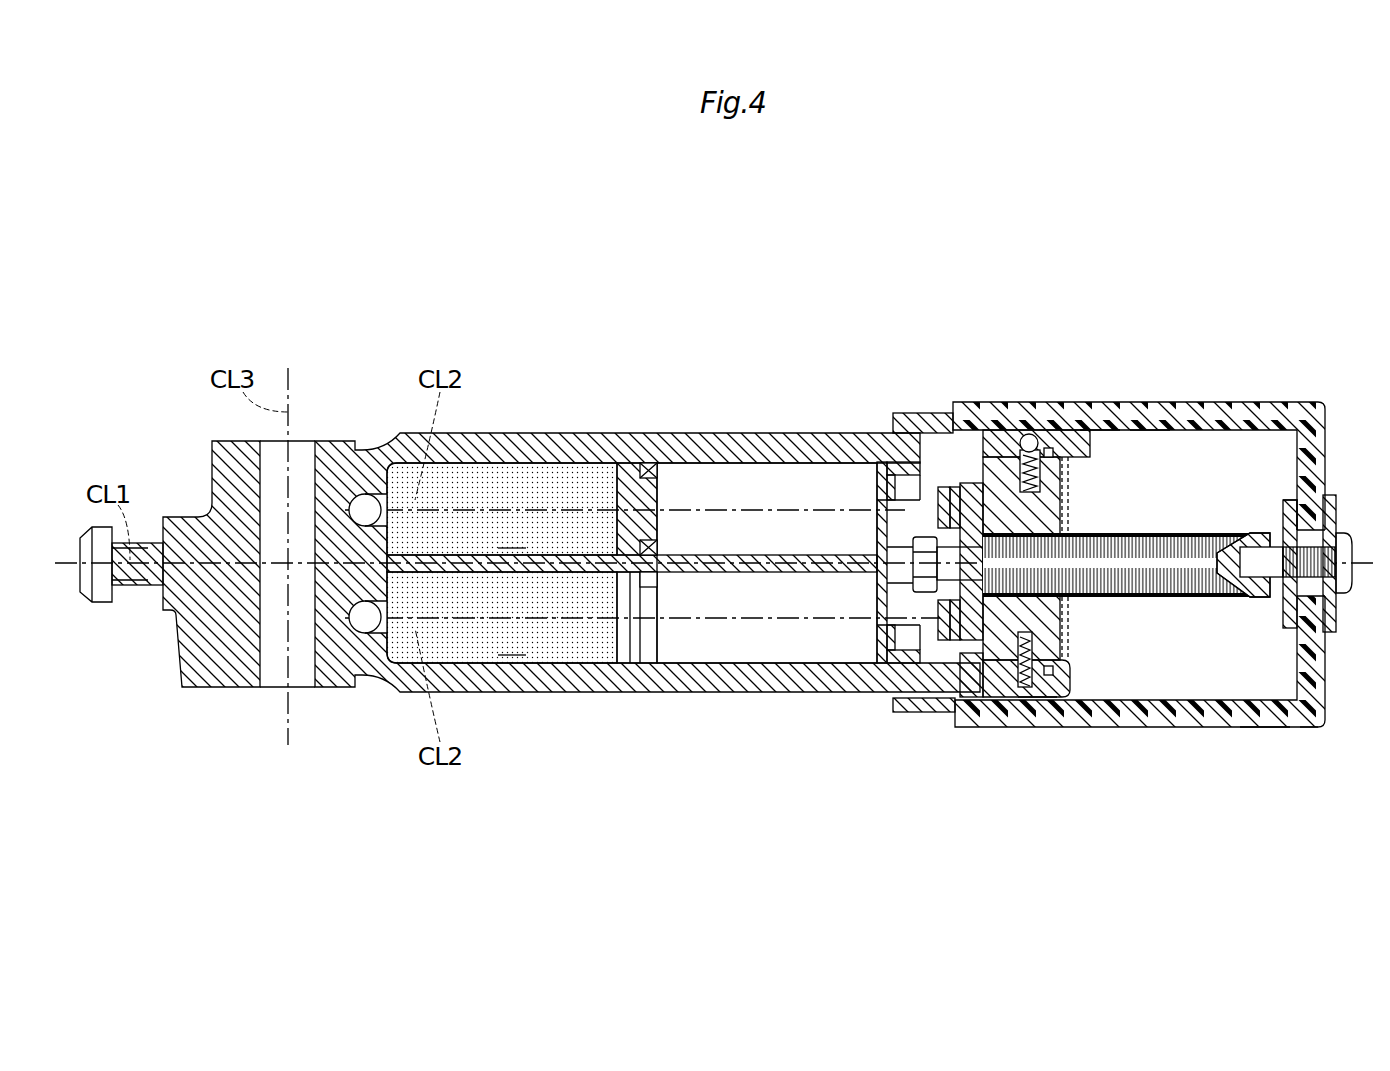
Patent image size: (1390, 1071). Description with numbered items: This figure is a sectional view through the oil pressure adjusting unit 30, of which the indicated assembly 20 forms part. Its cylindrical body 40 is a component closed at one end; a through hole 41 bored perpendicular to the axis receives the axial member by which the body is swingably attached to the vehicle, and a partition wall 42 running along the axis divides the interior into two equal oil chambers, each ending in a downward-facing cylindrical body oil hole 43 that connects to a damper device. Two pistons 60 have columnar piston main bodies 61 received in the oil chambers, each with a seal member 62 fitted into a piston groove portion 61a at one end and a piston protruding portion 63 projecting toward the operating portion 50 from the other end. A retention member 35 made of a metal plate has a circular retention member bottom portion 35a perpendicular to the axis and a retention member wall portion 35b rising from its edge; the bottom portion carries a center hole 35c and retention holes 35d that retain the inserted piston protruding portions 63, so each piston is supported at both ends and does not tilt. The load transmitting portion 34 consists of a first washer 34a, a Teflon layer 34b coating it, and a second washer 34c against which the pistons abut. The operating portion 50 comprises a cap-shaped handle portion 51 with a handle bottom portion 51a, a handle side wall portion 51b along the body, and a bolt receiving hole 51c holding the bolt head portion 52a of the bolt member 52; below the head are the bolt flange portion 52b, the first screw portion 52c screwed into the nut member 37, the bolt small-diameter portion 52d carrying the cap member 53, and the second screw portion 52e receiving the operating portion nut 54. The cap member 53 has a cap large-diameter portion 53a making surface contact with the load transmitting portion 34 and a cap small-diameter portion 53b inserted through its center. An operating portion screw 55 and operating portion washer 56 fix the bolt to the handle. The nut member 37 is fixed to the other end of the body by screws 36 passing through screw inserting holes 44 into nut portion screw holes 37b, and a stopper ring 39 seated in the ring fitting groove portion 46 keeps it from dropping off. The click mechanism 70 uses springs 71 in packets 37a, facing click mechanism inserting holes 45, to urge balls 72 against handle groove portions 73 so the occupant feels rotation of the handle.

The damper device 20 is at (1159, 510).
The oil pressure adjusting unit 30 is at (1159, 510).
The load transmitting portion 34 is at (892, 661).
The first washer 34a is at (972, 640).
The Teflon layer 34b is at (955, 640).
The second washer 34c is at (942, 640).
The retention member 35 is at (841, 476).
The retention member bottom portion 35a is at (880, 478).
The retention member wall portion 35b is at (903, 475).
The center hole 35c is at (880, 580).
The retention holes 35d is at (877, 500).
The screws 36 is at (1040, 700).
The nut member 37 is at (1070, 517).
The packets 37a is at (1032, 470).
The nut portion screw holes 37b is at (1032, 648).
The stopper ring 39 is at (1053, 672).
The cylindrical body 40 is at (566, 433).
The through hole 41 is at (306, 452).
The partition wall 42 is at (452, 553).
The cylindrical body oil holes 43 is at (357, 494).
The screw inserting holes 44 is at (975, 697).
The click mechanism inserting holes 45 is at (1026, 436).
The ring fitting groove portion 46 is at (1040, 462).
The operating portion 50 is at (1159, 564).
The handle portion 51 is at (1302, 656).
The handle bottom portion 51a is at (1330, 705).
The handle side wall portion 51b is at (1290, 728).
The bolt receiving hole 51c is at (1290, 525).
The bolt member 52 is at (1086, 510).
The bolt head portion 52a is at (1300, 610).
The bolt flange portion 52b is at (1282, 605).
The first screw portion 52c is at (1086, 510).
The bolt small-diameter portion 52d is at (973, 552).
The second screw portion 52e is at (913, 558).
The cap member 53 is at (991, 500).
The cap large-diameter portion 53a is at (990, 455).
The cap small-diameter portion 53b is at (935, 450).
The operating portion nut 54 is at (927, 590).
The operating portion screw 55 is at (1336, 595).
The operating portion washer 56 is at (1345, 535).
The pistons 60 is at (632, 568).
The piston main body 61 is at (712, 478).
The piston groove portion 61a is at (645, 550).
The seal member 62 is at (636, 463).
The piston protruding portion 63 is at (870, 465).
The click mechanism 70 is at (1120, 359).
The springs 71 is at (1100, 430).
The balls 72 is at (1044, 413).
The handle groove portions 73 is at (1164, 382).